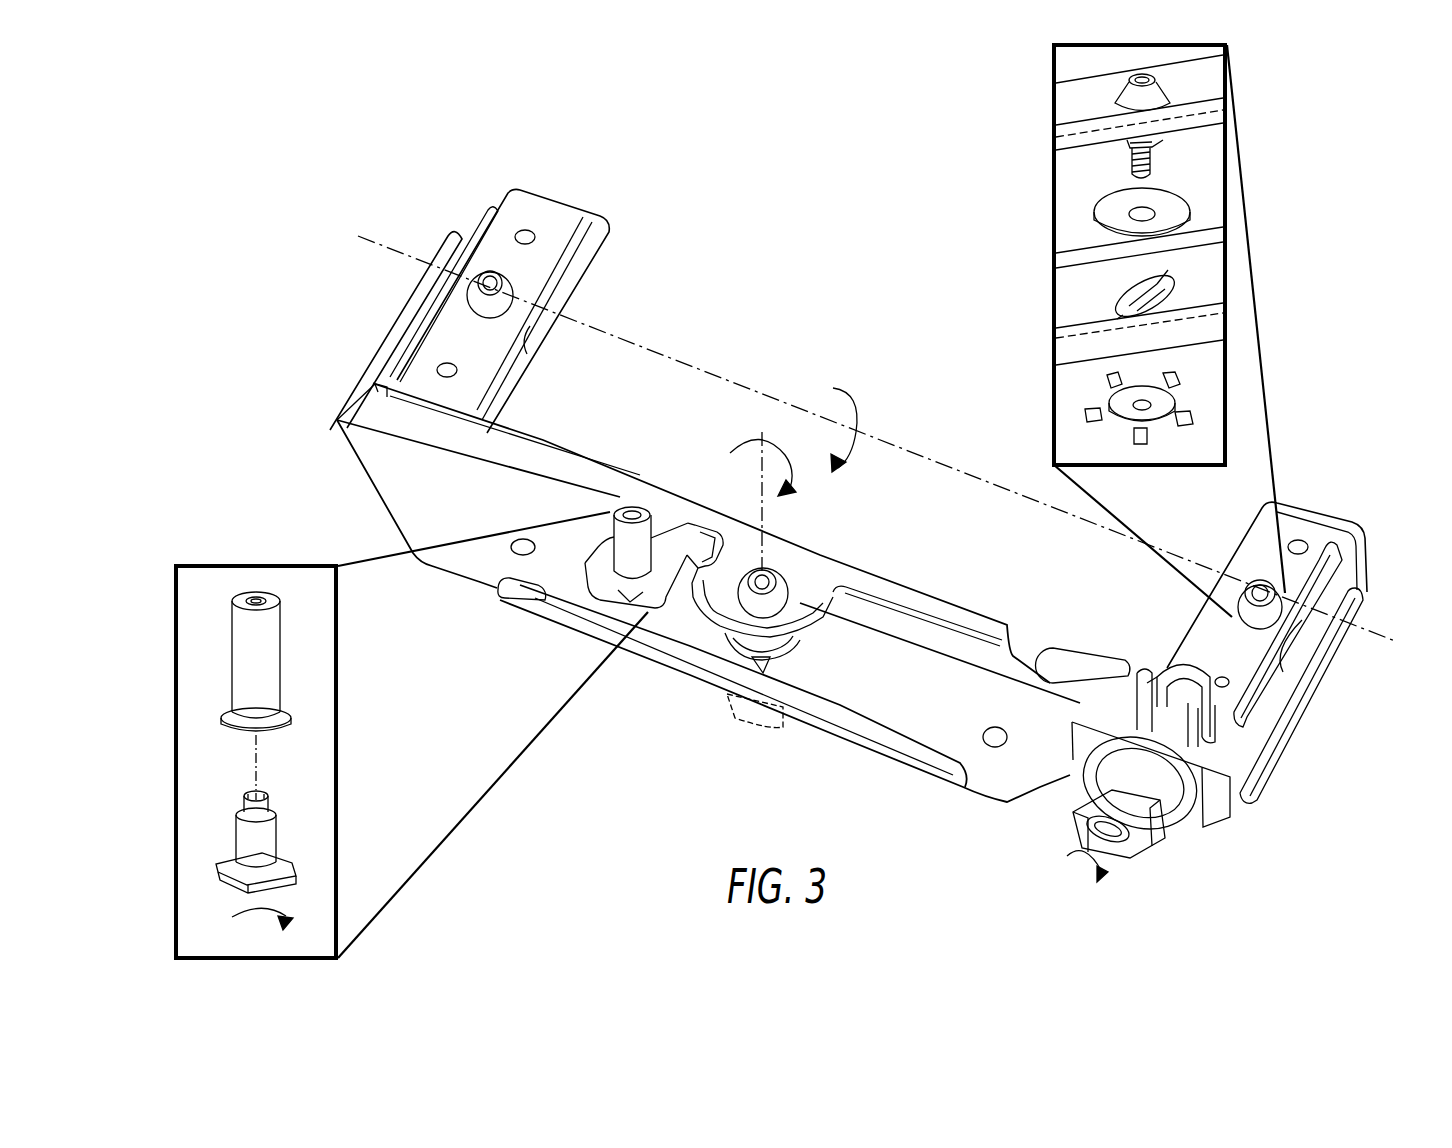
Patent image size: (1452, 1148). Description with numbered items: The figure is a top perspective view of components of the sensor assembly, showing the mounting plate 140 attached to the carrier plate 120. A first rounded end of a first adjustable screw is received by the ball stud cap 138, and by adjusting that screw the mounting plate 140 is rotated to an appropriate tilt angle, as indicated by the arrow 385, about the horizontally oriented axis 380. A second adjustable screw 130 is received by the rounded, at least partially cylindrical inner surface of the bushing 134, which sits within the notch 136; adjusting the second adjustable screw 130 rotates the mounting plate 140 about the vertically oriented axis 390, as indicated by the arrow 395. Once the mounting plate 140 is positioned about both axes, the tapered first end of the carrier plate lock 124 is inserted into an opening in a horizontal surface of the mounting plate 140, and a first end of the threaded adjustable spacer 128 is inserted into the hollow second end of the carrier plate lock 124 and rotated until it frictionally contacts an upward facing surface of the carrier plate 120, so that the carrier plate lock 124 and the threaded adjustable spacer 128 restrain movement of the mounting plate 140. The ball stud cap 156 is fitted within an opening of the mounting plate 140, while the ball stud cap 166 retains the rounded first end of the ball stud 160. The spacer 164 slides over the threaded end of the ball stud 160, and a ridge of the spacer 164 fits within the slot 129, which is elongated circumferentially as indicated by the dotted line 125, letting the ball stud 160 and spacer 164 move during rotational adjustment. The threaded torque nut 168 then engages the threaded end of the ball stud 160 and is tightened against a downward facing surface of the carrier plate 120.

The carrier plate 120 is at (906, 693).
The carrier plate lock 124 is at (598, 548).
The dotted line 125 is at (1128, 278).
The threaded adjustable spacer 128 is at (627, 597).
The slot 129 is at (1125, 295).
The second adjustable screw 130 is at (1105, 825).
The bushing 134 is at (1160, 660).
The notch 136 is at (1243, 710).
The ball stud cap 138 is at (777, 603).
The mounting plate 140 is at (826, 586).
The ball stud cap 156 is at (487, 272).
The ball stud 160 is at (1135, 152).
The spacer 164 is at (1095, 214).
The ball stud cap 166 is at (1115, 103).
The threaded torque nut 168 is at (1113, 390).
The horizontally oriented axis 380 is at (735, 384).
The arrow 385 is at (839, 387).
The vertically oriented axis 390 is at (758, 490).
The arrow 395 is at (747, 448).